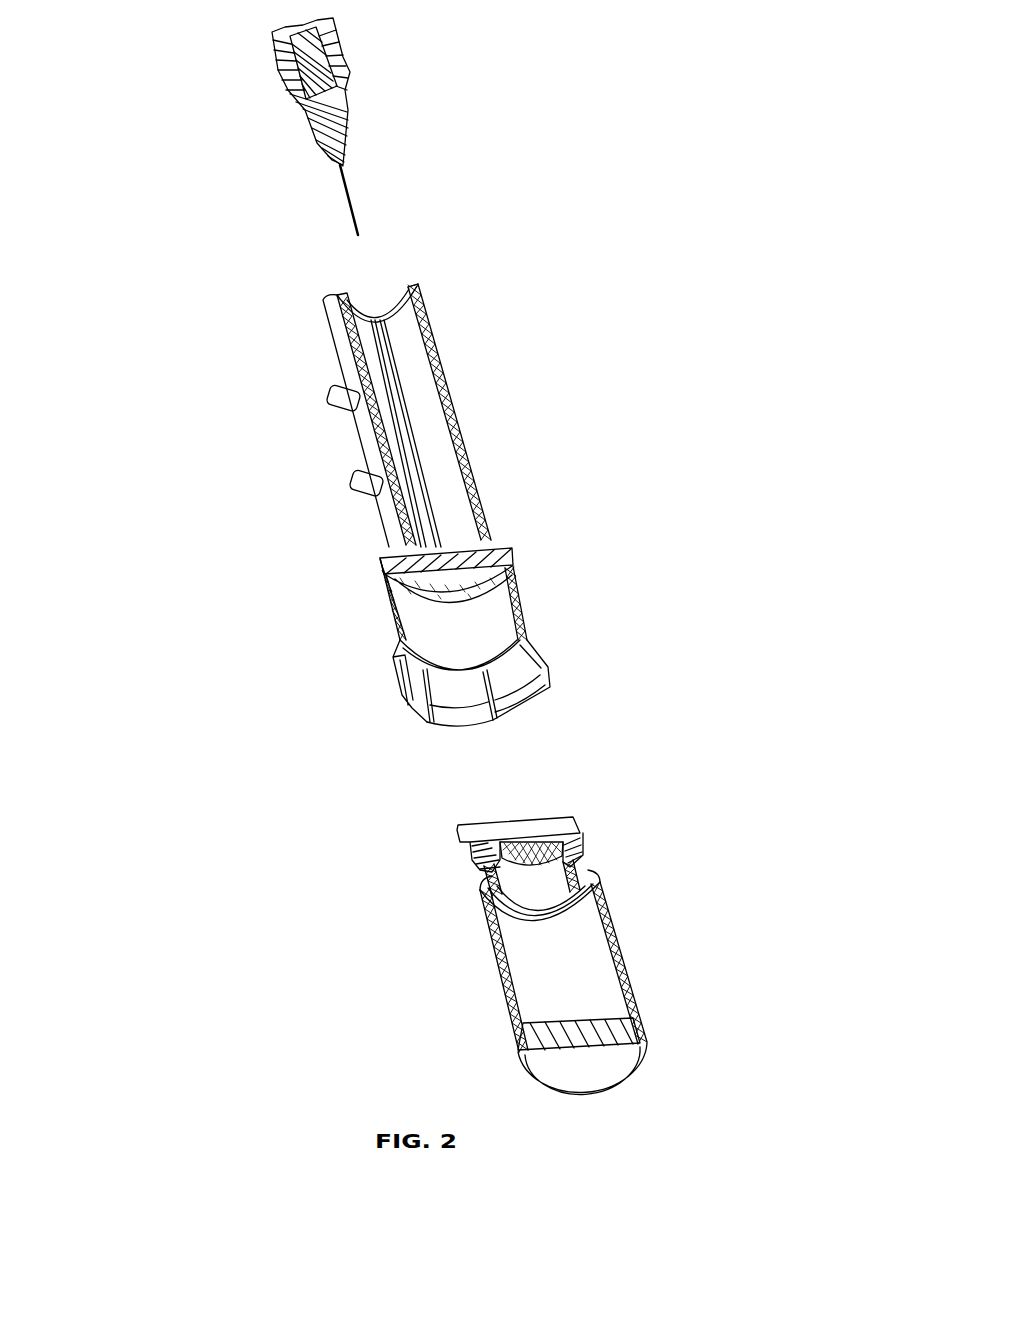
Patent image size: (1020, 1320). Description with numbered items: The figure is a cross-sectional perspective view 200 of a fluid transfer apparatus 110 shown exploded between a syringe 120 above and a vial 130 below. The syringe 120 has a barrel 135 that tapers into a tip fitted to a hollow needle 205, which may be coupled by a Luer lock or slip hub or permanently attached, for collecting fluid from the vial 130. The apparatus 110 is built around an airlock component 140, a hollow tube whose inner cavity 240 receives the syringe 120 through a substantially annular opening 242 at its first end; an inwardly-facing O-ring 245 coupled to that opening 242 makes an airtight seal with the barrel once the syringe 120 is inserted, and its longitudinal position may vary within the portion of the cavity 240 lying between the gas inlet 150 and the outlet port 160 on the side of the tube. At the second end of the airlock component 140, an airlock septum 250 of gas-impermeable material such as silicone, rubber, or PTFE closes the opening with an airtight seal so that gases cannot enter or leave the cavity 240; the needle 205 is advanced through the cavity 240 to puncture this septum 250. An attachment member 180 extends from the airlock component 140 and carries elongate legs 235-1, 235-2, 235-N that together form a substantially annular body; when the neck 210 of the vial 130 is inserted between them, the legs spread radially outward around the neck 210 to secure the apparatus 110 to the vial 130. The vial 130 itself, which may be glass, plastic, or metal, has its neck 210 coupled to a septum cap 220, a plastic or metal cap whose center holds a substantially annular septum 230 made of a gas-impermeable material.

The cross-sectional perspective view 200 is at (560, 58).
The fluid transfer apparatus 110 is at (210, 388).
The syringe 120 is at (245, 70).
The barrel 135 is at (347, 65).
The hollow needle 205 is at (355, 195).
The airlock component 140 is at (328, 340).
The inner cavity 240 is at (420, 382).
The inwardly-facing O-ring 245 is at (397, 291).
The annular opening 242 is at (430, 292).
The outlet port 160 is at (326, 402).
The gas inlet 150 is at (350, 486).
The attachment member 180 is at (385, 607).
The airlock septum 250 is at (500, 572).
The elongate leg 235-N is at (395, 712).
The elongate leg 235-2 is at (435, 712).
The elongate leg 235-1 is at (530, 680).
The vial 130 is at (637, 957).
The septum cap 220 is at (565, 830).
The septum 230 is at (528, 832).
The neck 210 is at (590, 870).